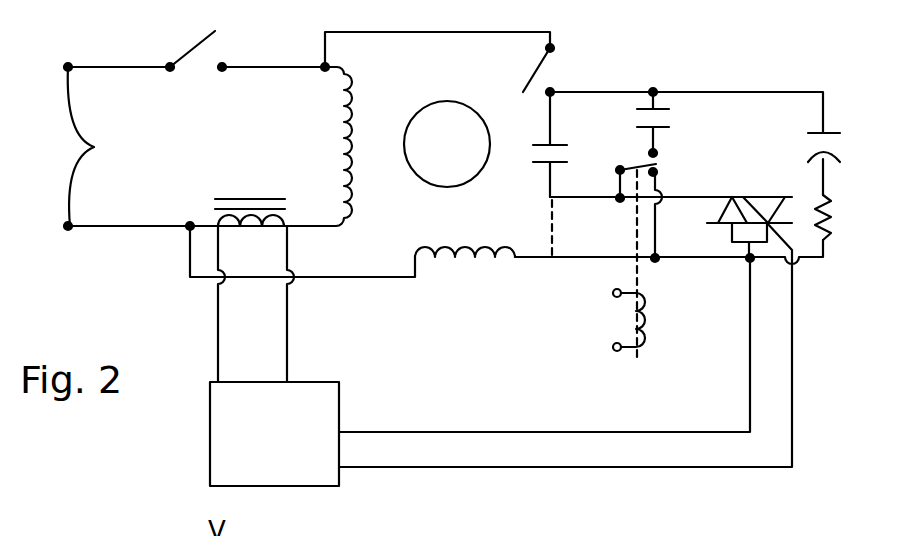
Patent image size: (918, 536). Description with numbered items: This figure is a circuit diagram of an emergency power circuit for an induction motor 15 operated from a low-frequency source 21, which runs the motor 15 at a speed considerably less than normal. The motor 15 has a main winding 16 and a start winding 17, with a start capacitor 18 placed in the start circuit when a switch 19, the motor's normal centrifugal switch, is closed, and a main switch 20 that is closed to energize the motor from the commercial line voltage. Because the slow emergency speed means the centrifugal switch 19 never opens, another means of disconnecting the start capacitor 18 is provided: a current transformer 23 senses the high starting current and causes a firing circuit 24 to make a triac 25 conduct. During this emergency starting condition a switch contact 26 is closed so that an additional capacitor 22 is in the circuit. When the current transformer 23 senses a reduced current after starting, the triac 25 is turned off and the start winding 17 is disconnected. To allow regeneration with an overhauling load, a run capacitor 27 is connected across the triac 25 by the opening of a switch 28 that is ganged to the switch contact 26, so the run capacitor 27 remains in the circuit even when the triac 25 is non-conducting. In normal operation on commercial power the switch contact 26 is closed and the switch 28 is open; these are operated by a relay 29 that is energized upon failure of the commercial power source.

The induction motor 15 is at (461, 89).
The main winding 16 is at (340, 112).
The start winding 17 is at (452, 250).
The start capacitor 18 is at (546, 170).
The centrifugal switch 19 is at (536, 68).
The main switch 20 is at (183, 55).
The low-frequency source 21 is at (101, 146).
The additional capacitor 22 is at (660, 110).
The current transformer 23 is at (282, 219).
The firing circuit 24 is at (305, 388).
The triac 25 is at (750, 220).
The switch contact 26 is at (650, 150).
The run capacitor 27 is at (828, 133).
The switch 28 is at (620, 172).
The relay 29 is at (645, 343).